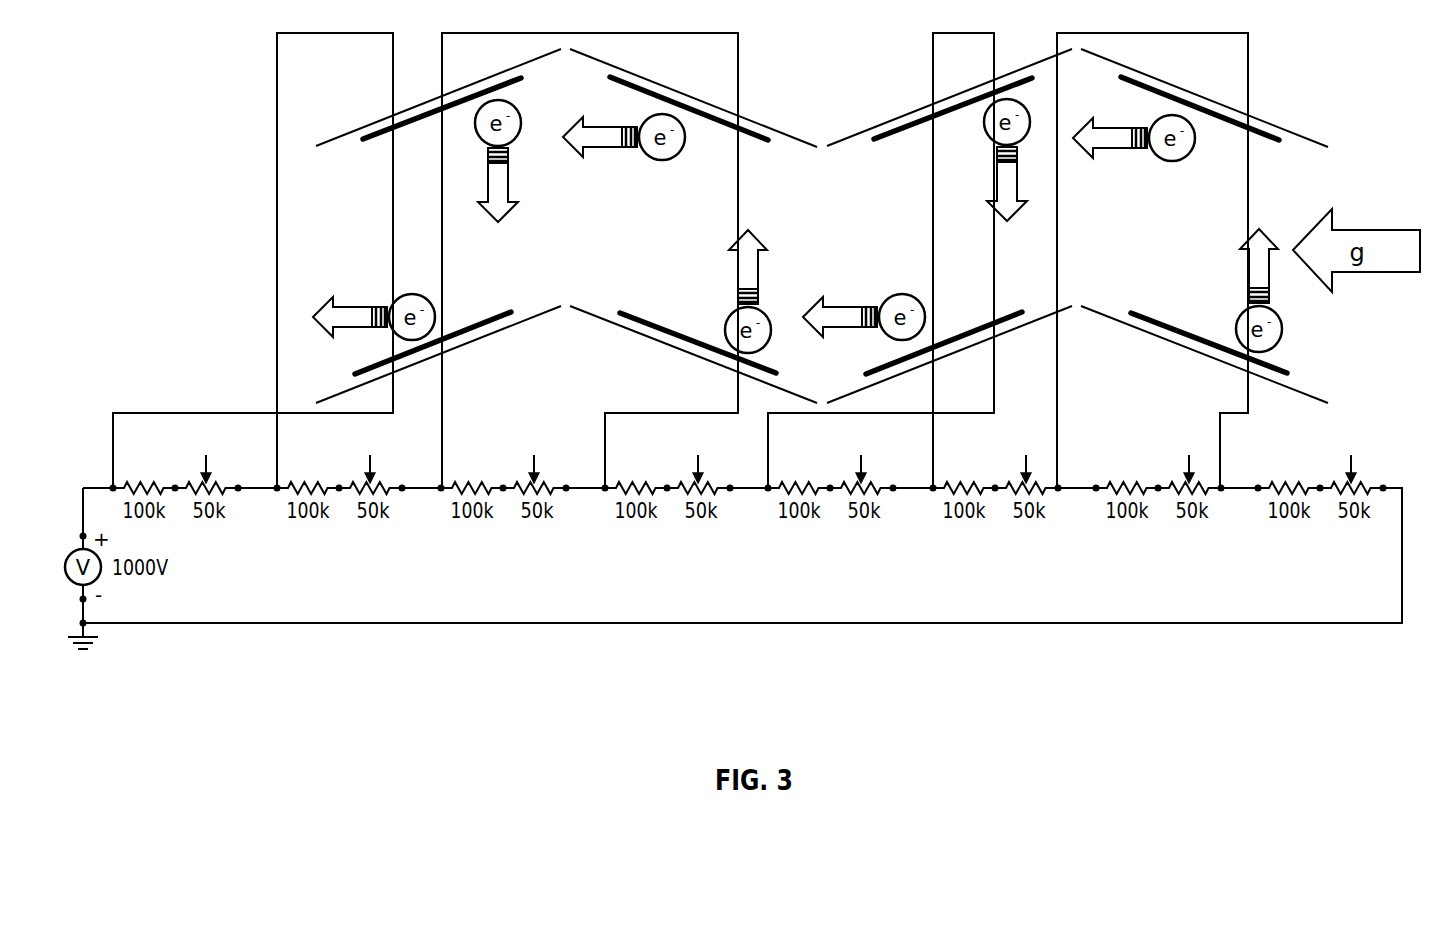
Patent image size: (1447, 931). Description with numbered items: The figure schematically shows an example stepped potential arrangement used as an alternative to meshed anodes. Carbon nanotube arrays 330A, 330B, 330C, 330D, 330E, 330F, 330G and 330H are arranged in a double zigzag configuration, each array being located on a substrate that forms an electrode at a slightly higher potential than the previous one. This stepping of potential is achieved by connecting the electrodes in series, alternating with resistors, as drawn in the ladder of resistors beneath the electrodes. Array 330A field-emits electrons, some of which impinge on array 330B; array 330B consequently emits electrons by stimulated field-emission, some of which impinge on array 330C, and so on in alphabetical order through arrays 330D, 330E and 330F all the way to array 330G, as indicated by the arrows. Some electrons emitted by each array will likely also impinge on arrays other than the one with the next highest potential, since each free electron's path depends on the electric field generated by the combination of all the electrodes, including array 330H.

The array 330A is at (1170, 323).
The array 330B is at (1252, 136).
The array 330C is at (890, 140).
The array 330D is at (990, 320).
The array 330E is at (657, 320).
The array 330F is at (742, 136).
The array 330G is at (392, 136).
The array 330H is at (492, 315).